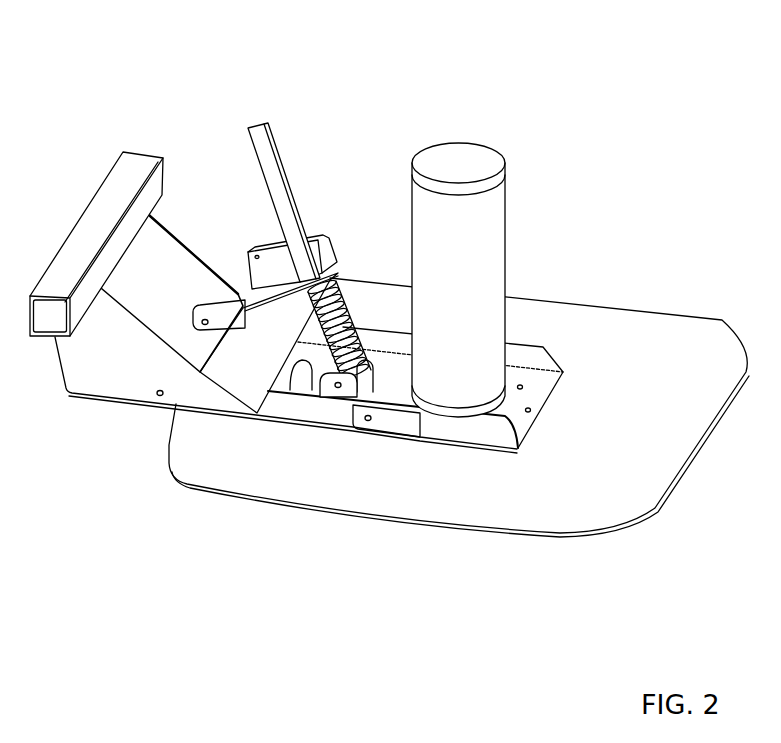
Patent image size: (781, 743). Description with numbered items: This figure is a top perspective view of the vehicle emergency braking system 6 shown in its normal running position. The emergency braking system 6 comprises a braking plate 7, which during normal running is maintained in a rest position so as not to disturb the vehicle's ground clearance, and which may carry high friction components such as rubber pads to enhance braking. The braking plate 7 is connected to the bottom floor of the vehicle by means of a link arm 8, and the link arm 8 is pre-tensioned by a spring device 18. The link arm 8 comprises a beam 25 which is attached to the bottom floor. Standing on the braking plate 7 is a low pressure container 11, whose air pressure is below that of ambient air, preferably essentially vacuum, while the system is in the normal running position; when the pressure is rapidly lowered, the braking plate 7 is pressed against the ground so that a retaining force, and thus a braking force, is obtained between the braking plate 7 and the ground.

The emergency braking system 6 is at (212, 177).
The braking plate 7 is at (623, 402).
The link arm 8 is at (187, 385).
The low pressure container 11 is at (482, 258).
The spring device 18 is at (332, 280).
The beam 25 is at (80, 255).